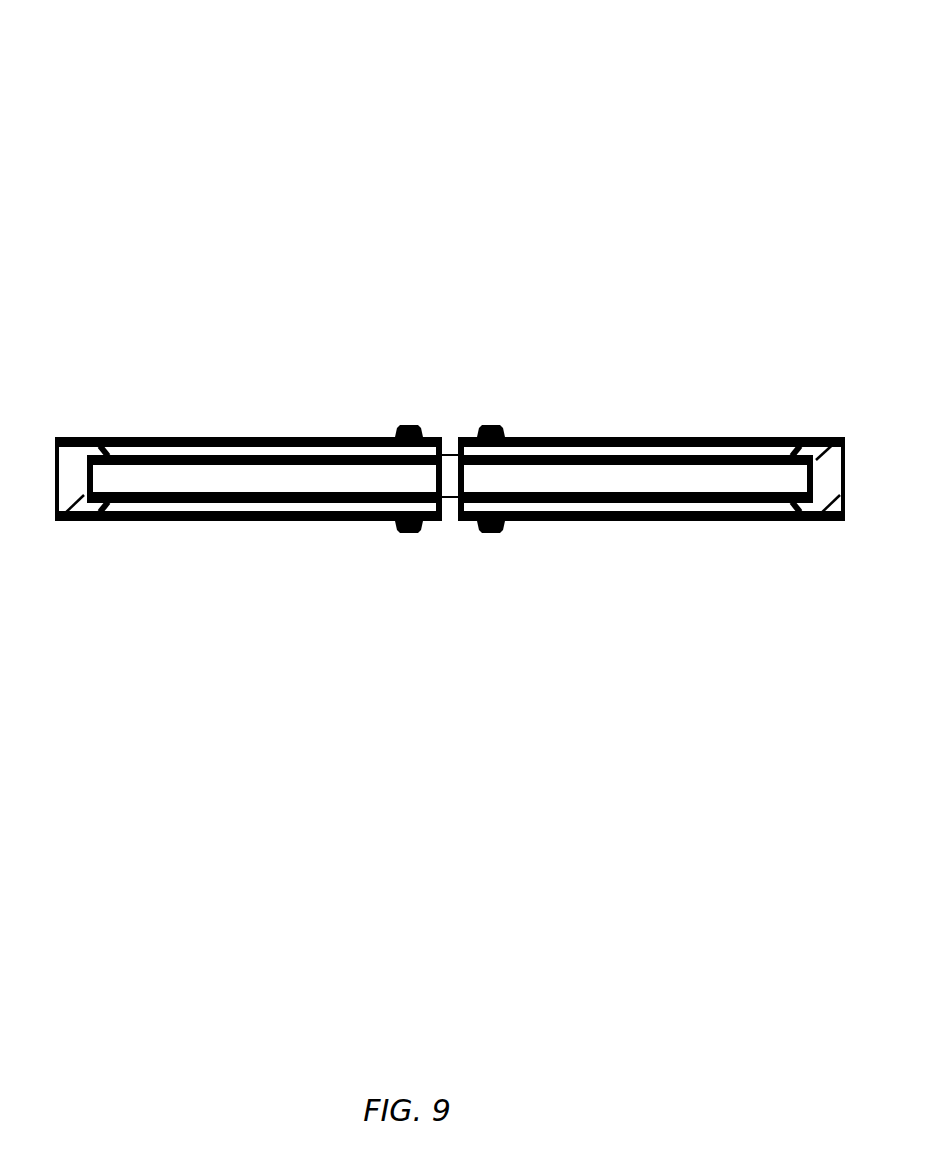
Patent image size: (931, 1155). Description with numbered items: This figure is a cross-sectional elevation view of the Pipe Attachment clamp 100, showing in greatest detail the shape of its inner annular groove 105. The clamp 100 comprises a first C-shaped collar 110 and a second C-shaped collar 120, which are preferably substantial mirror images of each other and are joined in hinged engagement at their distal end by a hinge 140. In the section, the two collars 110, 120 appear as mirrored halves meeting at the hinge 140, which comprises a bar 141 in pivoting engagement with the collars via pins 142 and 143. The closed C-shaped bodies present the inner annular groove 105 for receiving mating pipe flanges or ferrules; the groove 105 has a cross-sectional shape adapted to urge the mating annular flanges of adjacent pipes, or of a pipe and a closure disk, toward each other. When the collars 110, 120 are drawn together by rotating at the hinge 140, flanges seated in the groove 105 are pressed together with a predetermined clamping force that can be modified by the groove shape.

The Pipe Attachment clamp 100 is at (132, 155).
The inner annular groove 105 is at (160, 475).
The first C-shaped collar 110 is at (100, 420).
The second C-shaped collar 120 is at (822, 425).
The hinge 140 is at (453, 300).
The bar 141 is at (450, 465).
The pin 142 is at (395, 433).
The pin 143 is at (493, 417).